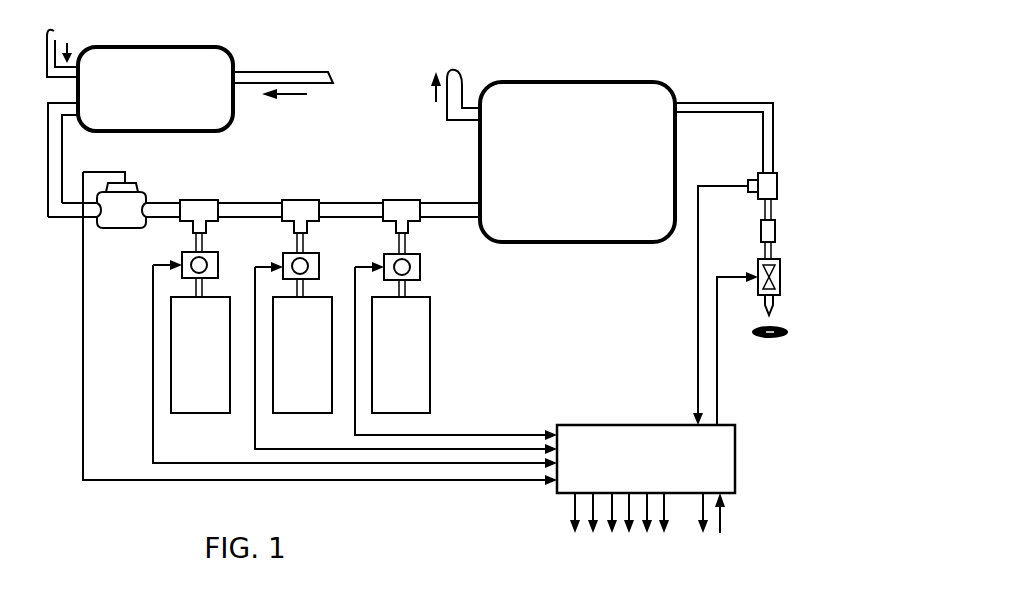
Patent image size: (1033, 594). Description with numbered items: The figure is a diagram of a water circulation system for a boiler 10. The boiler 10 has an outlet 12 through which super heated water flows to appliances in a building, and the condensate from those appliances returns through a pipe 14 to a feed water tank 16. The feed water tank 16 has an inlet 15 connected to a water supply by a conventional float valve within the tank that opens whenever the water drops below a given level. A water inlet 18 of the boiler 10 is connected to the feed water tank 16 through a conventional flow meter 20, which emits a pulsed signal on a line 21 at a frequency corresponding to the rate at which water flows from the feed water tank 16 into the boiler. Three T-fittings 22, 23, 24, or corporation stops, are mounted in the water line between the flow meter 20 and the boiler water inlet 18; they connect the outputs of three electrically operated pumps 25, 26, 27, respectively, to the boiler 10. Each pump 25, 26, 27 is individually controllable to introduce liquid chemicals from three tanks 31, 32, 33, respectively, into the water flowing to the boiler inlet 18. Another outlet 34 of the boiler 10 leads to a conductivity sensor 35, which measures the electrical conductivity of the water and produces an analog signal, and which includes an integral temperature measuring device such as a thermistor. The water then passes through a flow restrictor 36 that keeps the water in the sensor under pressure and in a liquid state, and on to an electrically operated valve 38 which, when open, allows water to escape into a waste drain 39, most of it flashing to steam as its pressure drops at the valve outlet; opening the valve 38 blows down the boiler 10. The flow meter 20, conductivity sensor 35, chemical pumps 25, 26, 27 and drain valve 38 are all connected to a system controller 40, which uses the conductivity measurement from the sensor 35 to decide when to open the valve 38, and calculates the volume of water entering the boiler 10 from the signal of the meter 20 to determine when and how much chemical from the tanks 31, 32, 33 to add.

The boiler 10 is at (568, 202).
The outlet 12 is at (455, 122).
The pipe 14 is at (330, 84).
The inlet 15 is at (56, 40).
The feed water tank 16 is at (237, 116).
The water inlet 18 is at (455, 212).
The flow meter 20 is at (130, 184).
The line 21 is at (83, 352).
The T-fitting 22 is at (190, 200).
The T-fitting 23 is at (293, 200).
The T-fitting 24 is at (408, 200).
The pump 25 is at (188, 253).
The pump 26 is at (285, 254).
The pump 27 is at (386, 255).
The tank 31 is at (221, 411).
The tank 32 is at (322, 411).
The tank 33 is at (425, 368).
The outlet 34 is at (750, 109).
The conductivity sensor 35 is at (775, 183).
The flow restrictor 36 is at (770, 232).
The valve 38 is at (780, 268).
The waste drain 39 is at (772, 326).
The system controller 40 is at (640, 428).